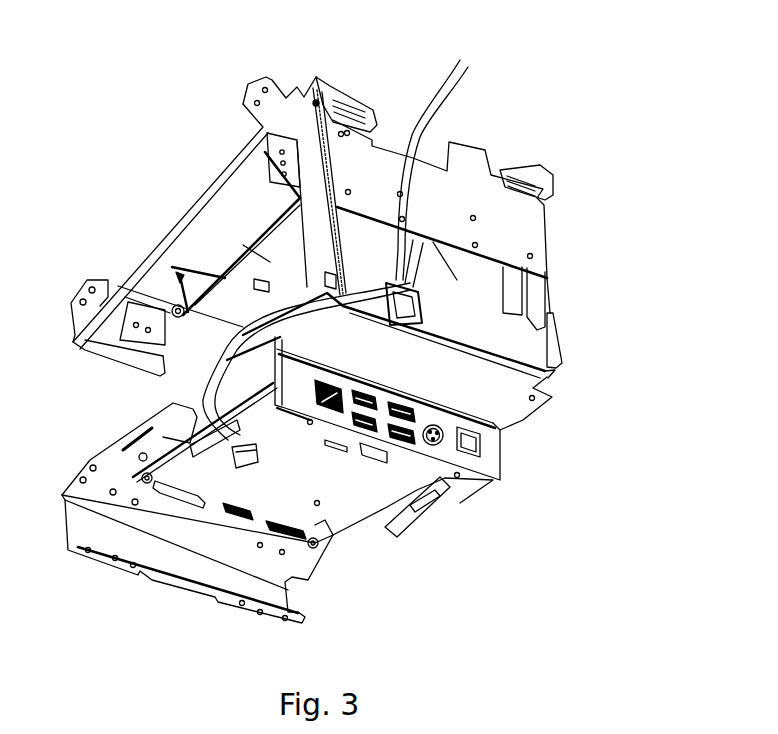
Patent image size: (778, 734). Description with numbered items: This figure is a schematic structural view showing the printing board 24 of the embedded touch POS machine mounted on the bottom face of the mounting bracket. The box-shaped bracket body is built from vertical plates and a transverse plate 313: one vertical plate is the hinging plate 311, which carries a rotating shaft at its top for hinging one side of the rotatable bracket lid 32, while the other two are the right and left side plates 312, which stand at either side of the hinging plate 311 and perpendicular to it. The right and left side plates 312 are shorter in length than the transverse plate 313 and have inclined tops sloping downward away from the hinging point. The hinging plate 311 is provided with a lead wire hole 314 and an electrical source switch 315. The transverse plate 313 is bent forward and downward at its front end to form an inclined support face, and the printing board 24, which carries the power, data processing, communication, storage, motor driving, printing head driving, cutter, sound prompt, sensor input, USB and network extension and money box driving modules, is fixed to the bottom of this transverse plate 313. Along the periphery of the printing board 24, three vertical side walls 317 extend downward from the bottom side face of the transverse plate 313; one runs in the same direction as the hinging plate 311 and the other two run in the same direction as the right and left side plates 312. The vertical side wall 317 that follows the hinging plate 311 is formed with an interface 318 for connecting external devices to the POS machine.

The printing board 24 is at (313, 493).
The bracket lid 32 is at (188, 228).
The hinging plate 311 is at (437, 205).
The right and left side plates 312 is at (312, 170).
The transverse plate 313 is at (457, 390).
The lead wire hole 314 is at (425, 294).
The electrical source switch 315 is at (410, 300).
The vertical side walls 317 is at (493, 463).
The interface 318 is at (377, 437).